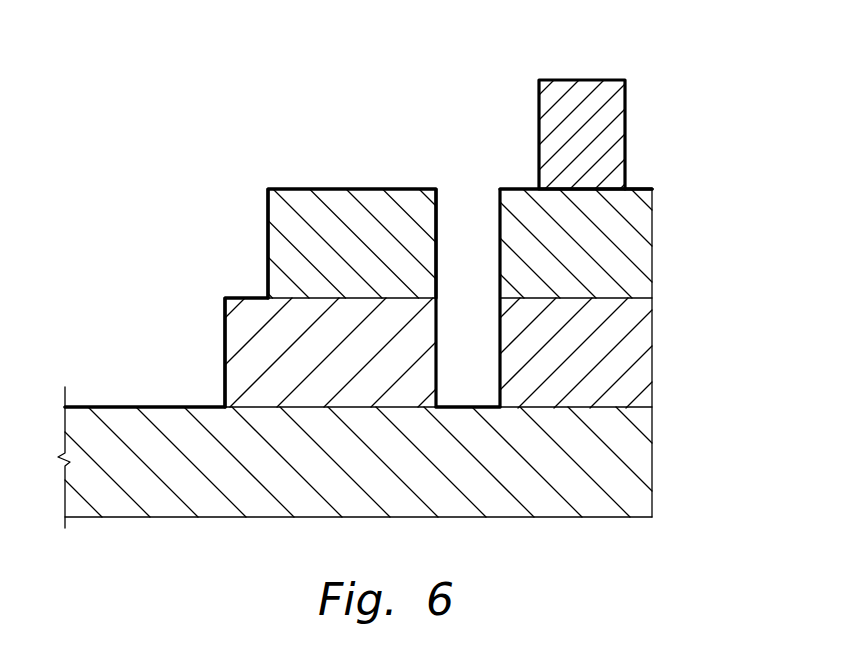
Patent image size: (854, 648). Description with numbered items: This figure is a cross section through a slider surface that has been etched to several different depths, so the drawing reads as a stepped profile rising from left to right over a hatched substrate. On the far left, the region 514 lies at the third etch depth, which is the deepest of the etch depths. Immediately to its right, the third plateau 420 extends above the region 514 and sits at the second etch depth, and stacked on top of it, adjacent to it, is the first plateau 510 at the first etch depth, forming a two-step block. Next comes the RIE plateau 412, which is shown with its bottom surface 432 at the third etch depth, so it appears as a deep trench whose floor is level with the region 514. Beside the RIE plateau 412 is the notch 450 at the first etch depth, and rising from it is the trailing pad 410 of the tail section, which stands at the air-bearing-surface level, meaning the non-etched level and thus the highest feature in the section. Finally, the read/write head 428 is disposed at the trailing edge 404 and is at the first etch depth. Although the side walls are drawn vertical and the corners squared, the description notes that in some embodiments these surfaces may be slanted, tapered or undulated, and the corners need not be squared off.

The trailing edge 404 is at (671, 333).
The trailing pad 410 is at (585, 90).
The RIE plateau 412 is at (459, 72).
The third plateau 420 is at (242, 297).
The read/write head 428 is at (643, 188).
The bottom surface 432 is at (478, 386).
The notch 450 is at (515, 188).
The first plateau 510 is at (330, 188).
The region 514 is at (153, 405).